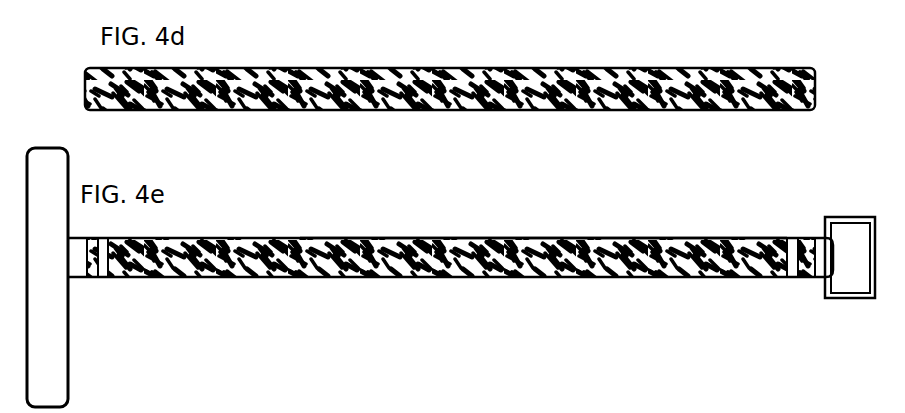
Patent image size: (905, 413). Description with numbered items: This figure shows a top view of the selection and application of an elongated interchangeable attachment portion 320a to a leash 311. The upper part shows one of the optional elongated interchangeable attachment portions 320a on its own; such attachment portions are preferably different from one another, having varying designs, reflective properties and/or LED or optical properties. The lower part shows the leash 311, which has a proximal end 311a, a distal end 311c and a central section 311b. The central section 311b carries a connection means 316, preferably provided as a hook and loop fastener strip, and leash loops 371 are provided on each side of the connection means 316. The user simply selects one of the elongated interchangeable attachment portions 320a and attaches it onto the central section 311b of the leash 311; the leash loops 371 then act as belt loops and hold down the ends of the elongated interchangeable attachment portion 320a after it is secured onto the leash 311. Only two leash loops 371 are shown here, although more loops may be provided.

In FIG. 4D, the elongated interchangeable attachment portion 320a is at (492, 68).
In FIG. 4E, the elongated interchangeable attachment portion 320a is at (518, 278).
In FIG. 4E, the leash 311 is at (298, 240).
In FIG. 4E, the proximal end 311a is at (78, 283).
In FIG. 4E, the central section 311b is at (438, 238).
In FIG. 4E, the distal end 311c is at (818, 263).
In FIG. 4E, the connection means 316 is at (552, 238).
In FIG. 4E, the leash loops 371 is at (107, 240).